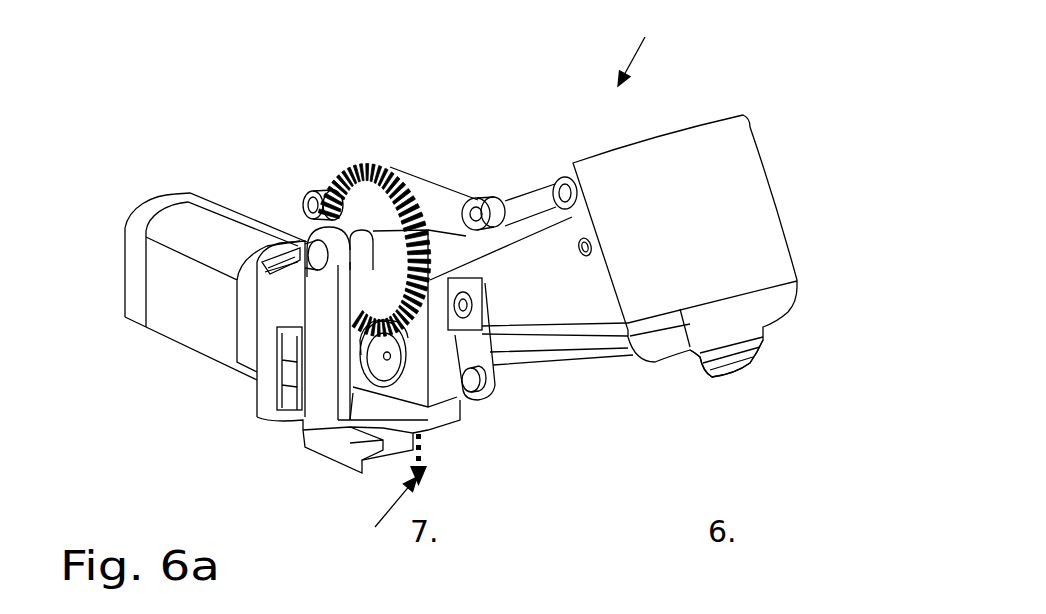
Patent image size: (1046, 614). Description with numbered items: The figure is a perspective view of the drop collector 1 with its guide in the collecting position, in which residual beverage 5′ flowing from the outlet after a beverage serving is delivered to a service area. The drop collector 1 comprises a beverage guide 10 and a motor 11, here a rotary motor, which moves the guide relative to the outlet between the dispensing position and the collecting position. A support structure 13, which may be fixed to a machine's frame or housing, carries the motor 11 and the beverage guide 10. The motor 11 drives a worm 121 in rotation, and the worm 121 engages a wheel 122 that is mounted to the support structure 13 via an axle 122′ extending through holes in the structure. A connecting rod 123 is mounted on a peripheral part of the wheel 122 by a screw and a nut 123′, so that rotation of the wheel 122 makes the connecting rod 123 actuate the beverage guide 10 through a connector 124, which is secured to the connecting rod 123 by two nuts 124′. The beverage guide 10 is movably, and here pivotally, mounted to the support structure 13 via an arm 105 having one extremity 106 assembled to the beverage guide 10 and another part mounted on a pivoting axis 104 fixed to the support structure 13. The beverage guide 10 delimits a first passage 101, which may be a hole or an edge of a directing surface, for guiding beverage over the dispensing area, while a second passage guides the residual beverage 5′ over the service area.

The drop collector 1 is at (636, 43).
The beverage guide 10 is at (733, 143).
The first passage 101 is at (737, 377).
The motor 11 is at (192, 215).
The support structure 13 is at (263, 388).
The pivoting axis 104 is at (463, 380).
The arm 105 is at (489, 357).
The extremity 106 is at (473, 292).
The worm 121 is at (375, 372).
The wheel 122 is at (357, 187).
The axle 122′ is at (310, 248).
The connecting rod 123 is at (437, 203).
The nut 123′ is at (312, 195).
The connector 124 is at (542, 203).
The nuts 124′ is at (503, 197).
The residual beverage 5′ is at (375, 523).